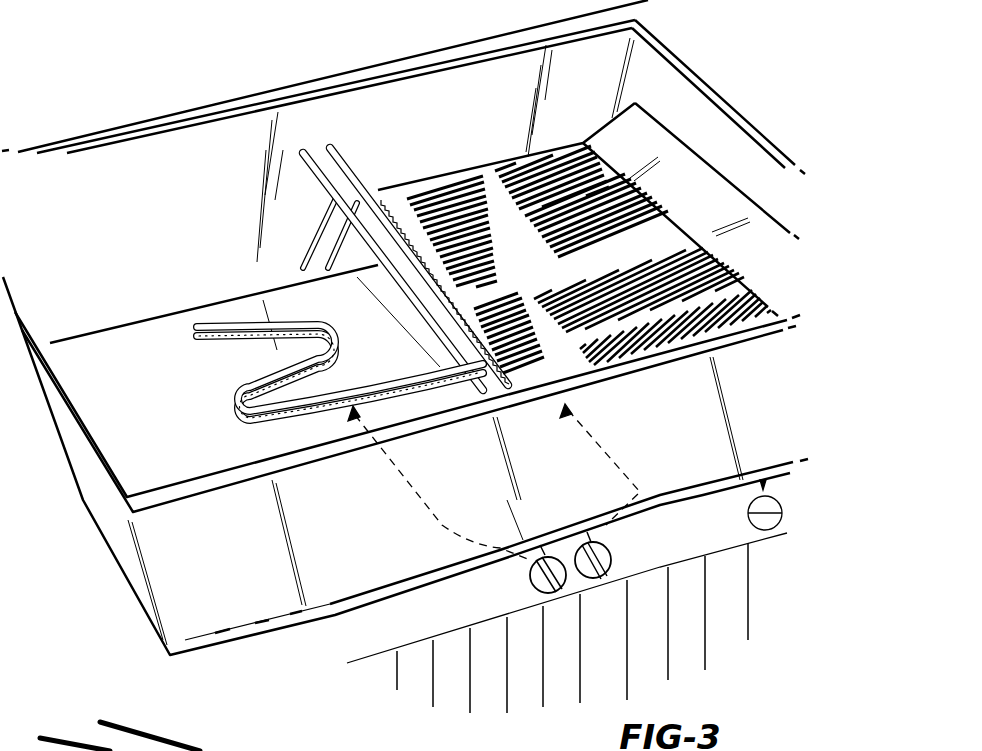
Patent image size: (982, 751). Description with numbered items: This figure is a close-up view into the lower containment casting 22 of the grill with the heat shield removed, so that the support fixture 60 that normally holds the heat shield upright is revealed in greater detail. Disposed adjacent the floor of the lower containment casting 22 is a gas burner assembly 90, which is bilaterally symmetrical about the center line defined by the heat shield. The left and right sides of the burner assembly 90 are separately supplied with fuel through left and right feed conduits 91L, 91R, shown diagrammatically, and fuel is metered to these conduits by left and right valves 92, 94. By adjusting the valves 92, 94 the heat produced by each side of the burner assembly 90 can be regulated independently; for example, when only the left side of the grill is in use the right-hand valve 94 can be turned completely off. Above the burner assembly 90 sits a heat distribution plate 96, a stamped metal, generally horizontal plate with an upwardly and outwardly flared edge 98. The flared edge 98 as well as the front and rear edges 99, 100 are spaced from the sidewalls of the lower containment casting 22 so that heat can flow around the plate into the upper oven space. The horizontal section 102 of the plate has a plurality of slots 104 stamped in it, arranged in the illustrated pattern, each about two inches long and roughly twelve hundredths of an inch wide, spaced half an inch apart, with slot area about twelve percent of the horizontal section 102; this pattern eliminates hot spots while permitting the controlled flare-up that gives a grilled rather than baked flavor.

The lower containment casting 22 is at (143, 602).
The support fixture 60 is at (357, 160).
The gas burner assembly 90 is at (236, 322).
The left feed conduit 91L is at (400, 488).
The right feed conduit 91R is at (585, 430).
The left valve 92 is at (530, 578).
The right valve 94 is at (612, 548).
The heat distribution plate 96 is at (488, 182).
The upwardly and outwardly flared edge 98 is at (670, 130).
The front edge 99 is at (726, 328).
The rear edge 100 is at (437, 175).
The horizontal section 102 is at (637, 290).
The slots 104 is at (717, 252).